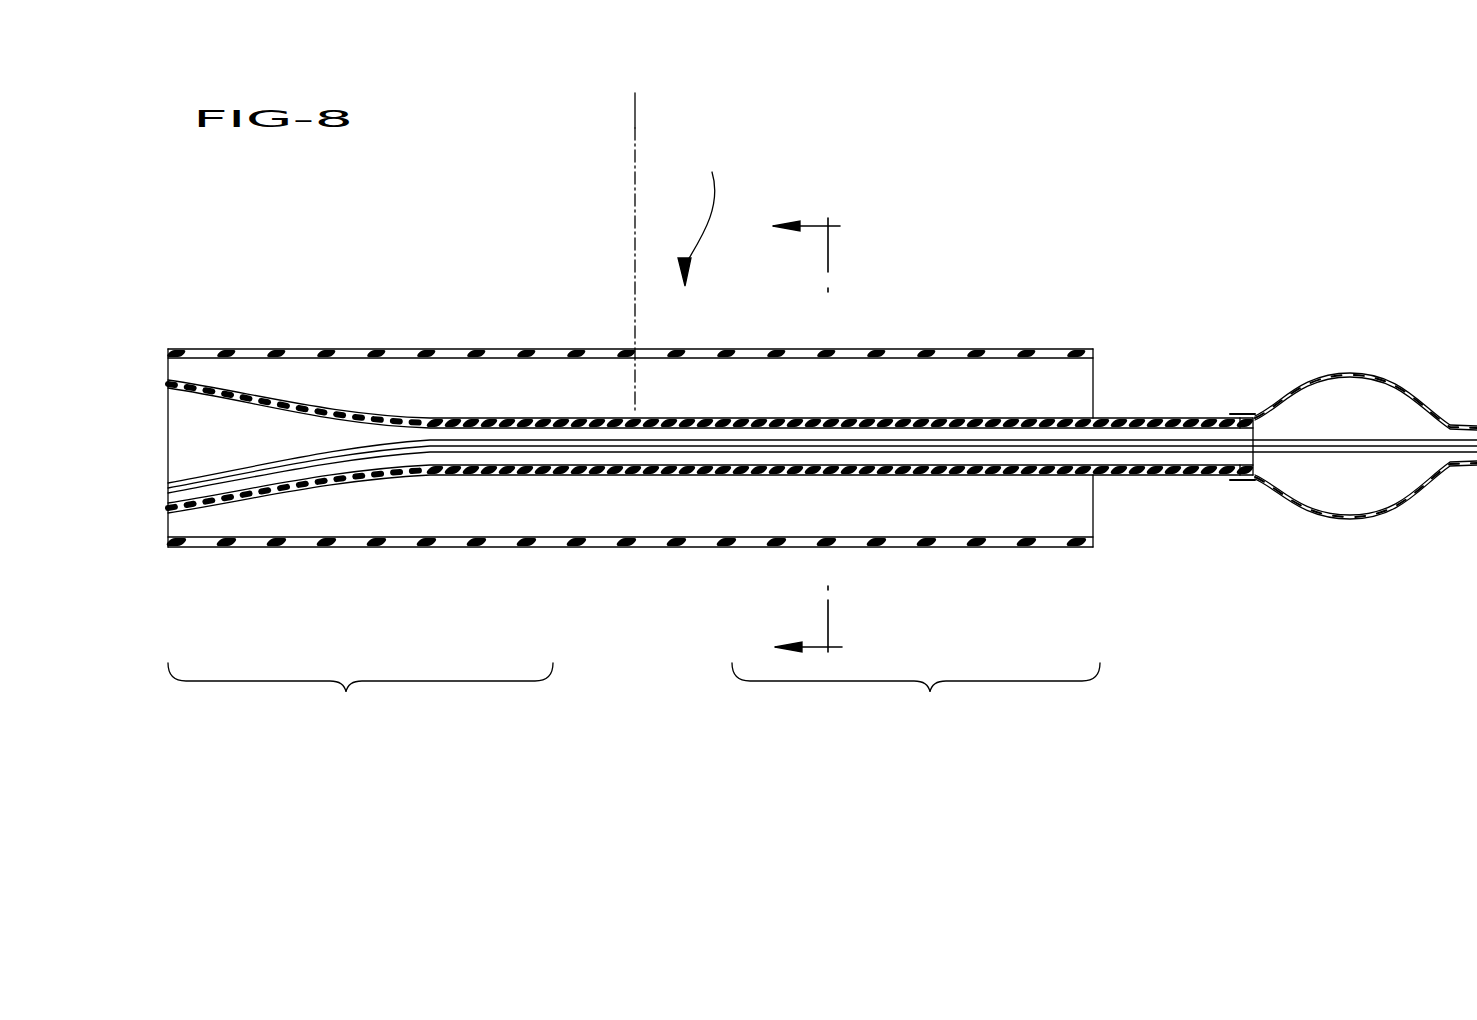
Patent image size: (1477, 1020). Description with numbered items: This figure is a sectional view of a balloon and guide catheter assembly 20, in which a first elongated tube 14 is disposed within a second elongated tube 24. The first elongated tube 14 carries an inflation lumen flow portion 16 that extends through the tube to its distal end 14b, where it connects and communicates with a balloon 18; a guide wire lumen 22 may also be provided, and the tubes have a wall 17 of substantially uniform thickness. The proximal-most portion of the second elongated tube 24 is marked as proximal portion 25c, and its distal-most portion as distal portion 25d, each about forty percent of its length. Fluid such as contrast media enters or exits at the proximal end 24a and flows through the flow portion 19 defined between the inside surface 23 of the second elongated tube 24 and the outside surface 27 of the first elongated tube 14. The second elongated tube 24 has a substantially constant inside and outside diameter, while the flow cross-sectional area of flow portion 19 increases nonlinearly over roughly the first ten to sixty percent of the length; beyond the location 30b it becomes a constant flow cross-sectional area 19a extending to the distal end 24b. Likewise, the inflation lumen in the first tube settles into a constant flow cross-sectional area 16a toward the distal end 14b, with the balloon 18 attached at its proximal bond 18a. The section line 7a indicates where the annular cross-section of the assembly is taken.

The section line 7a is at (825, 438).
The first elongated tube 14 is at (357, 413).
The distal end 14b is at (1273, 410).
The inflation lumen flow portion 16 is at (208, 428).
The constant flow cross-sectional area 16a is at (1165, 418).
The wall 17 is at (725, 470).
The balloon 18 is at (1397, 390).
The proximal balloon bond 18a is at (1235, 414).
The flow portion 19 is at (505, 375).
The constant flow cross-sectional area 19a is at (915, 395).
The balloon and guide catheter assembly 20 is at (702, 215).
The guide wire lumen 22 is at (353, 457).
The inside surface 23 is at (962, 355).
The second elongated tube 24 is at (620, 348).
The proximal end 24a is at (170, 550).
The distal end 24b is at (1093, 542).
The proximal portion 25c is at (360, 695).
The distal portion 25d is at (916, 695).
The outside surface 27 is at (752, 425).
The section location 30b is at (635, 128).